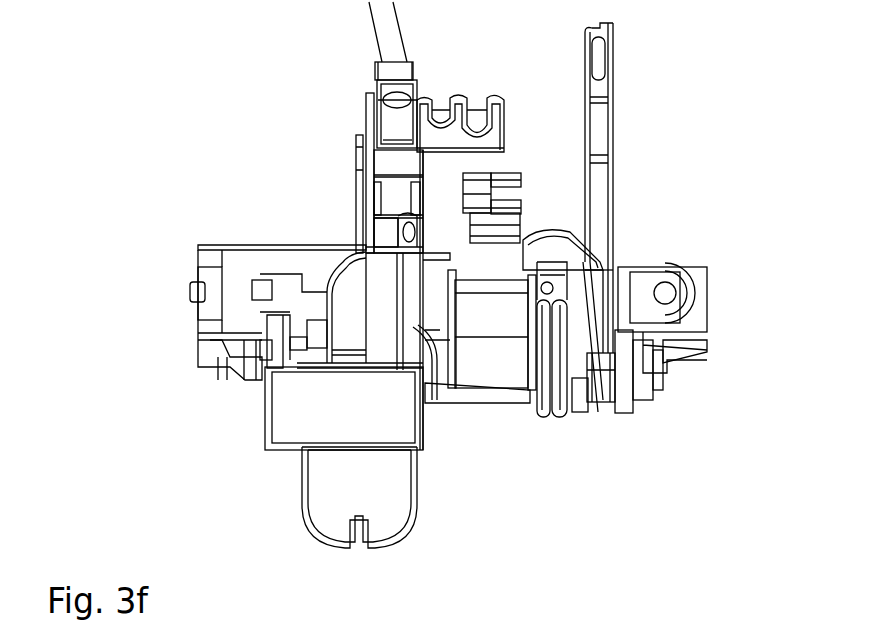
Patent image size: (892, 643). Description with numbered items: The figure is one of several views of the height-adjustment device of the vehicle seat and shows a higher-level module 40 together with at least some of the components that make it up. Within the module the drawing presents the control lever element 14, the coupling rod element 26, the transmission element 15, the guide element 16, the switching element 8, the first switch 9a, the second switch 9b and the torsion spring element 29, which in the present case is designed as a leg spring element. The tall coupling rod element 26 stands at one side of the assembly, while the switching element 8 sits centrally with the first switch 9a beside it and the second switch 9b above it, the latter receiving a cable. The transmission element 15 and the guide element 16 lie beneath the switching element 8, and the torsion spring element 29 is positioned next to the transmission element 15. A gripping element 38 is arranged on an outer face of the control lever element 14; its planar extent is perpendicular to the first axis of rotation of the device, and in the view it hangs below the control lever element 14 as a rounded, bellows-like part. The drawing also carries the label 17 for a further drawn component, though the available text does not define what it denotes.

The switching element 8 is at (353, 278).
The first switch 9a is at (238, 288).
The second switch 9b is at (385, 125).
The control lever element 14 is at (283, 440).
The transmission element 15 is at (480, 400).
The guide element 16 is at (432, 400).
The drive unit 17 is at (643, 441).
The coupling rod element 26 is at (600, 135).
The torsion spring element 29 is at (548, 412).
The gripping element 38 is at (390, 523).
The higher-level module 40 is at (716, 133).